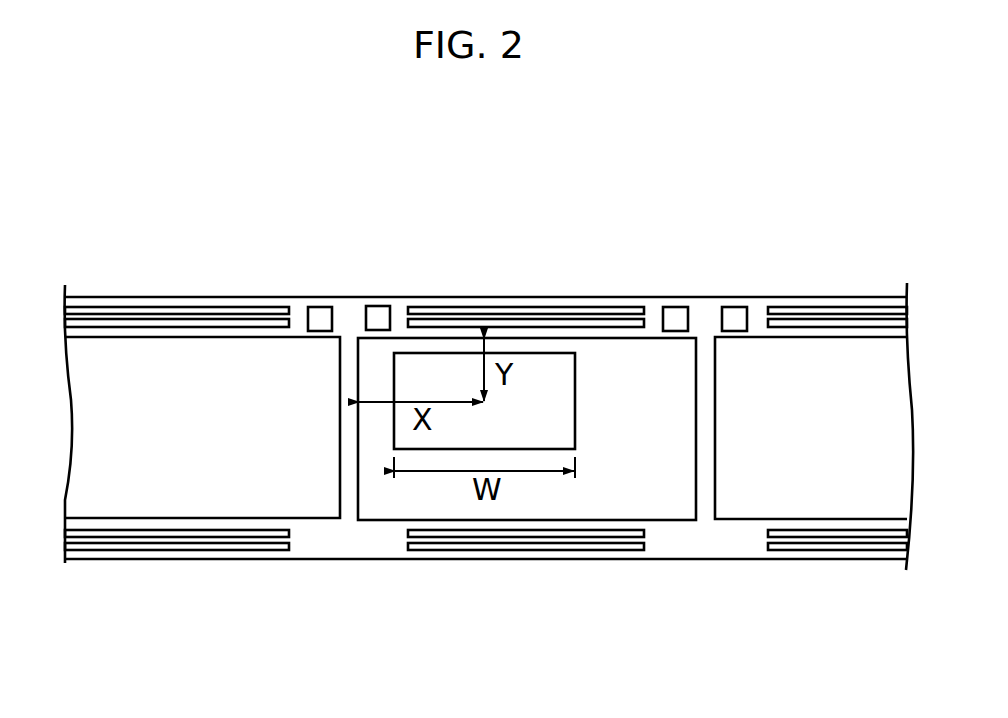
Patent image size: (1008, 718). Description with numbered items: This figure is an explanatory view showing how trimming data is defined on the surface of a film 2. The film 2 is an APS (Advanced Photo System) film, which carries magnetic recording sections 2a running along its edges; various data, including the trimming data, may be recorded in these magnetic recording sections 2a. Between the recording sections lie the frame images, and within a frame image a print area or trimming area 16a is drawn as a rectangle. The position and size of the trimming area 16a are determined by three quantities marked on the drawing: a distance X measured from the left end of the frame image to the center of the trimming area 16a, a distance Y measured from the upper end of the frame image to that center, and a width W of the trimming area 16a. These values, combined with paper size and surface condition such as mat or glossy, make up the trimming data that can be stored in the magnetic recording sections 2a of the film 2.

The film 2 is at (232, 284).
The magnetic recording section 2a is at (600, 320).
The trimming area 16a is at (427, 380).